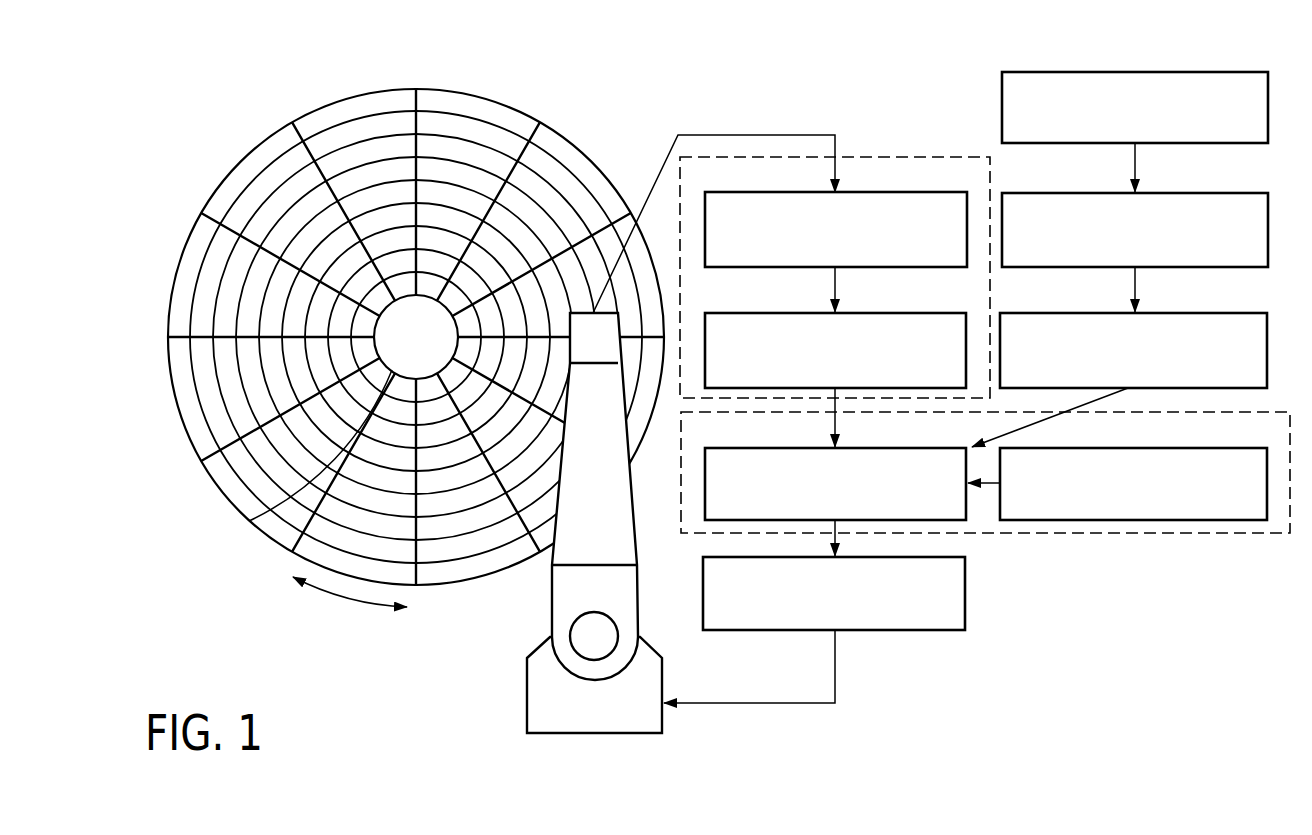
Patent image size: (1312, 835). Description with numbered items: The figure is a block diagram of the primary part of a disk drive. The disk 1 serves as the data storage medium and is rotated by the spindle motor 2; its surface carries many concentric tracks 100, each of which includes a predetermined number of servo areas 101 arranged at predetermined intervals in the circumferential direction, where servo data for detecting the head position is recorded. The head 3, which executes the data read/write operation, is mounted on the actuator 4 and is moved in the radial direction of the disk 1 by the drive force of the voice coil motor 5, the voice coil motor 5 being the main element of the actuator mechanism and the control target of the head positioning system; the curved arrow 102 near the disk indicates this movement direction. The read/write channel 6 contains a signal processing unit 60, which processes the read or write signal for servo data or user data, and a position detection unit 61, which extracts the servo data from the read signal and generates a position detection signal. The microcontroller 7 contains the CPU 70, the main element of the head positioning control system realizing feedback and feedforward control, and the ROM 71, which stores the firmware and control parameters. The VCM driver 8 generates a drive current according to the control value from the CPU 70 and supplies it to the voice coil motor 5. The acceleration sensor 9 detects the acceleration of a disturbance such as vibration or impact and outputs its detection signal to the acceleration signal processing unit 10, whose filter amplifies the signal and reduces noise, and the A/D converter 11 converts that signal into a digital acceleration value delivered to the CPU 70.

The disk 1 is at (498, 86).
The spindle motor 2 is at (250, 523).
The head 3 is at (608, 347).
The actuator 4 is at (620, 530).
The voice coil motor 5 is at (595, 723).
The read/write channel 6 is at (871, 152).
The microcontroller 7 is at (1208, 537).
The VCM driver 8 is at (917, 630).
The acceleration sensor 9 is at (1205, 72).
The acceleration signal processing unit 10 is at (1205, 193).
The A/D converter 11 is at (1205, 313).
The signal processing unit 60 is at (893, 192).
The position detection unit 61 is at (893, 313).
The CPU 70 is at (893, 448).
The ROM 71 is at (1175, 448).
The track 100 is at (185, 406).
The servo area 101 is at (168, 337).
The seek direction 102 is at (345, 599).